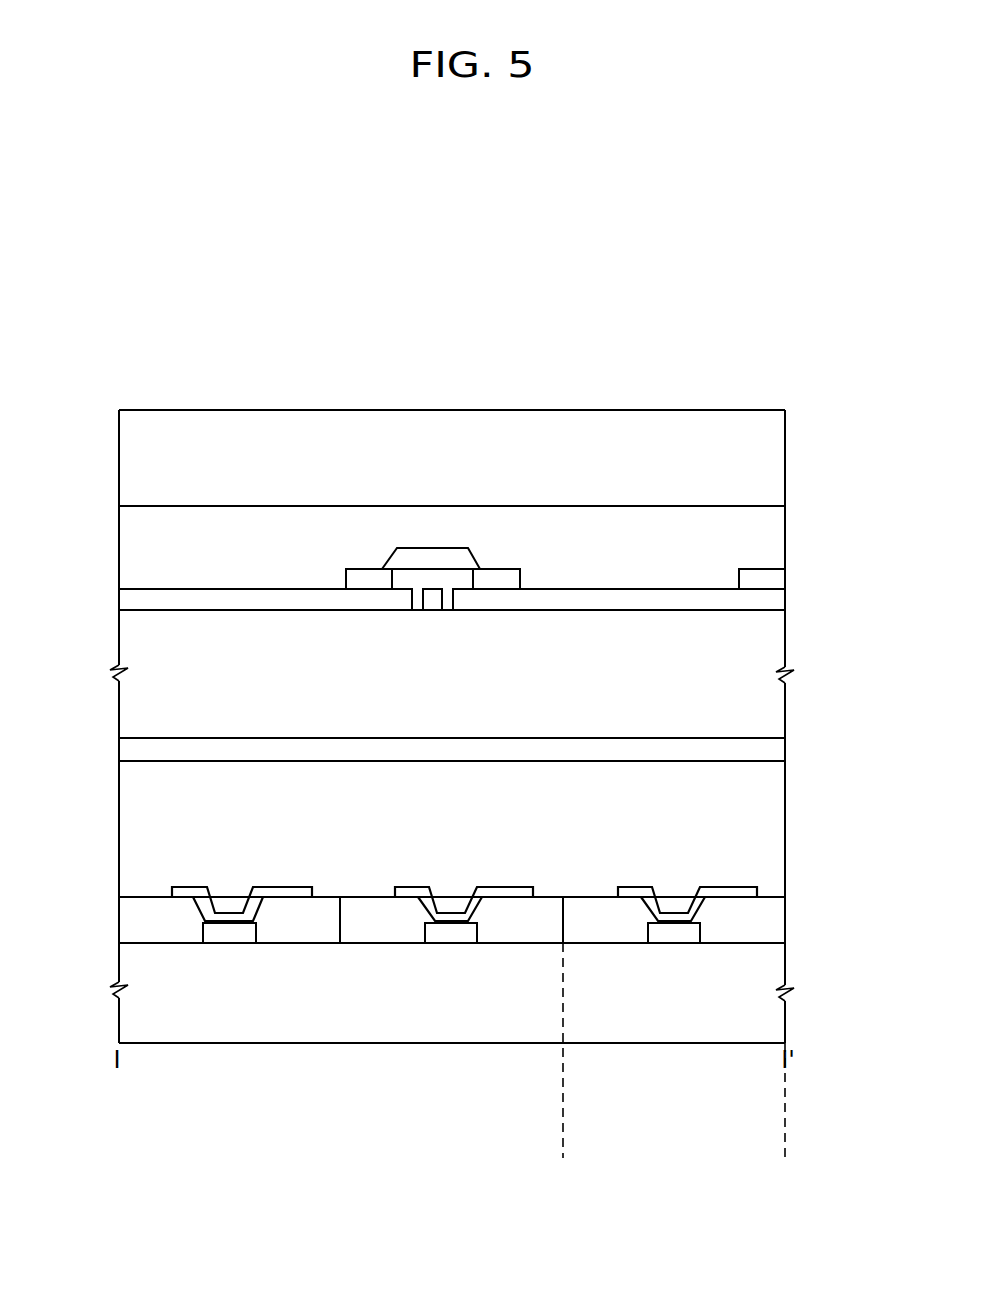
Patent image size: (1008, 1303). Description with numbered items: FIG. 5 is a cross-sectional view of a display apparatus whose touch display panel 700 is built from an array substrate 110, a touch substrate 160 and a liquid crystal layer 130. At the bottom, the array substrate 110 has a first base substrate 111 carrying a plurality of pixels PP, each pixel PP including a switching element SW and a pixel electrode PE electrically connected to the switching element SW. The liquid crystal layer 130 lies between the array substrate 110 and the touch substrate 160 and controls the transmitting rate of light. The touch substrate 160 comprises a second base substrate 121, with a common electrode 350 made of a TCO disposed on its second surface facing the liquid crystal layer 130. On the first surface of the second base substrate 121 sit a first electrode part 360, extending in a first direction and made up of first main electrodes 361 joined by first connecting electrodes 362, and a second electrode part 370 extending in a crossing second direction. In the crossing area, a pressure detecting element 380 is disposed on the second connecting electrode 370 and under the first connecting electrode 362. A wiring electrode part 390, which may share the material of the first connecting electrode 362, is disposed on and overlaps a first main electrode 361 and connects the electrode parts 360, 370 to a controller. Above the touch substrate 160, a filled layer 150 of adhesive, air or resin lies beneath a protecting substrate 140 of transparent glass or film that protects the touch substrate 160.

The touch display panel 700 is at (458, 254).
The second base substrate 121 is at (240, 642).
The first electrode part 360 is at (301, 352).
The first main electrode 361 is at (316, 602).
The first connecting electrode 362 is at (390, 566).
The pressure detecting element 380 is at (440, 580).
The second electrode part 370 is at (438, 600).
The wiring electrode part 390 is at (753, 577).
The protecting substrate 140 is at (778, 447).
The filled layer 150 is at (778, 535).
The touch substrate 160 is at (795, 572).
The common electrode 350 is at (126, 748).
The liquid crystal layer 130 is at (795, 765).
The array substrate 110 is at (795, 900).
The first base substrate 111 is at (265, 997).
The switching element SW is at (452, 933).
The pixel electrode PE is at (513, 893).
The pixel PP is at (563, 1150).